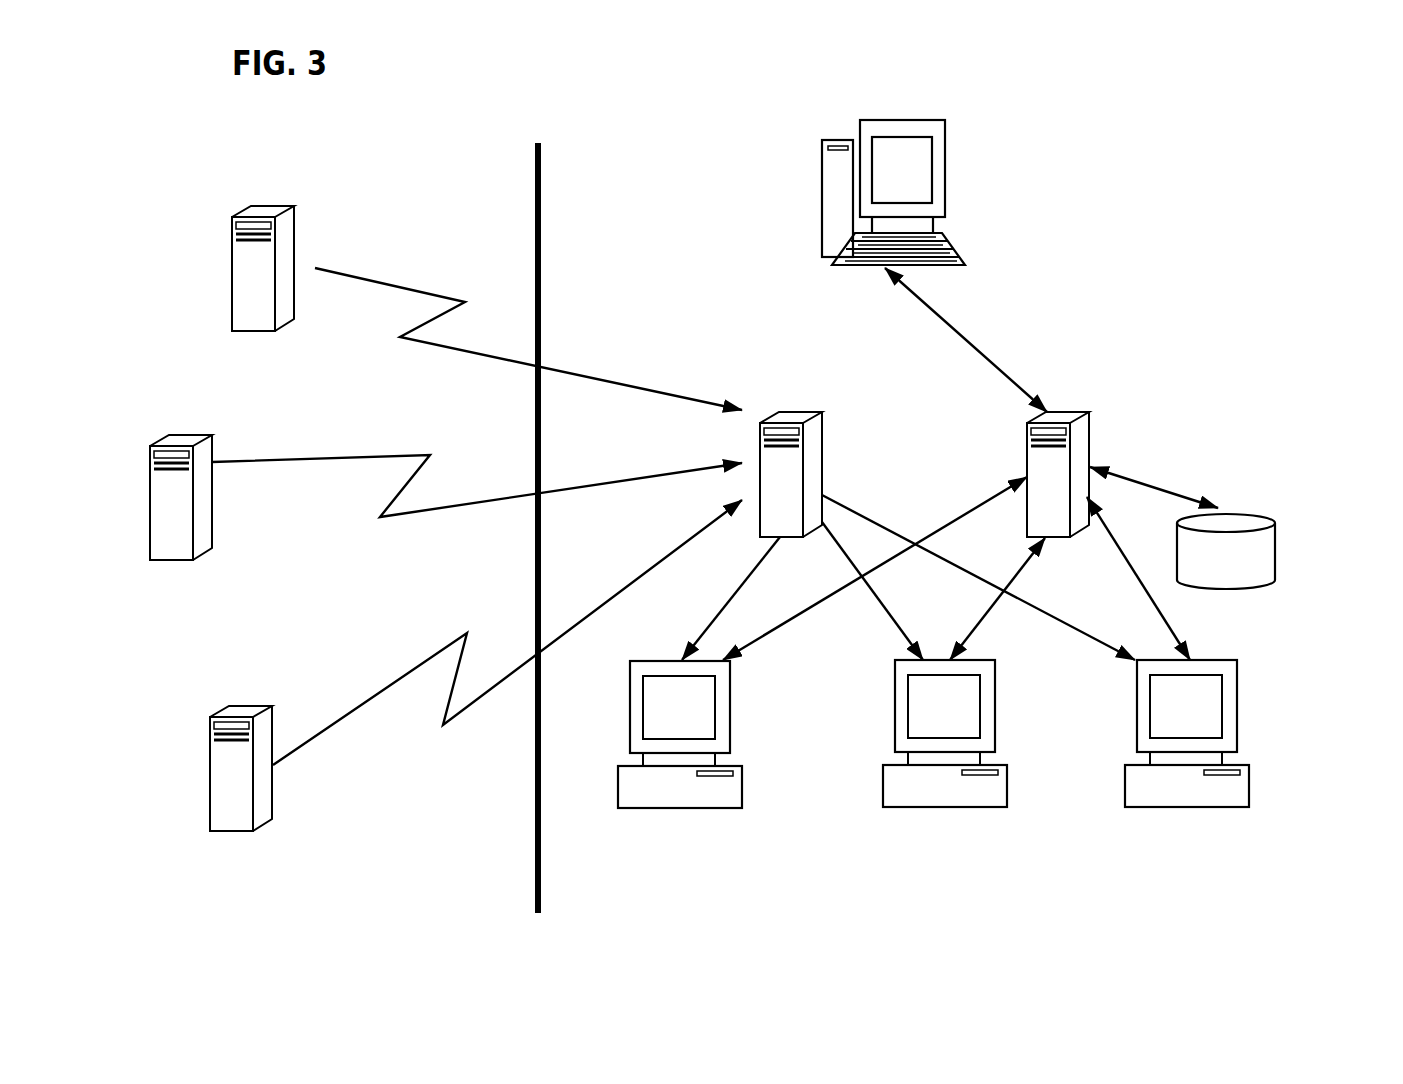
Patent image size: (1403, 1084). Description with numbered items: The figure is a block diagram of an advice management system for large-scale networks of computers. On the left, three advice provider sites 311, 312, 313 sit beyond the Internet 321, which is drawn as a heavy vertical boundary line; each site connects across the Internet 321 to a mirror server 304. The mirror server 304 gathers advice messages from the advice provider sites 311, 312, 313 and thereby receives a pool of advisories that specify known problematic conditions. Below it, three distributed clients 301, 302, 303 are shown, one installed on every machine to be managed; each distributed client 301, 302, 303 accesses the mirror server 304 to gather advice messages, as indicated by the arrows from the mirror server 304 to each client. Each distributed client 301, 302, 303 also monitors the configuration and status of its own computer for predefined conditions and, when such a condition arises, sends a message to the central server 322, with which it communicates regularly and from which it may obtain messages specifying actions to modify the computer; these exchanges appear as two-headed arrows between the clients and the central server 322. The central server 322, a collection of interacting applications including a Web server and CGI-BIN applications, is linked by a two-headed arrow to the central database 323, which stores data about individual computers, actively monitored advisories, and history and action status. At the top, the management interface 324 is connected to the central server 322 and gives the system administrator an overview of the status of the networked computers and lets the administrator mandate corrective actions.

The distributed client 301 is at (688, 808).
The distributed client 302 is at (965, 807).
The distributed client 303 is at (1198, 807).
The mirror server 304 is at (823, 442).
The advice provider site 311 is at (272, 198).
The advice provider site 312 is at (192, 432).
The advice provider site 313 is at (252, 700).
The Internet 321 is at (541, 172).
The central server 322 is at (1090, 442).
The central database 323 is at (1275, 520).
The management interface 324 is at (945, 160).